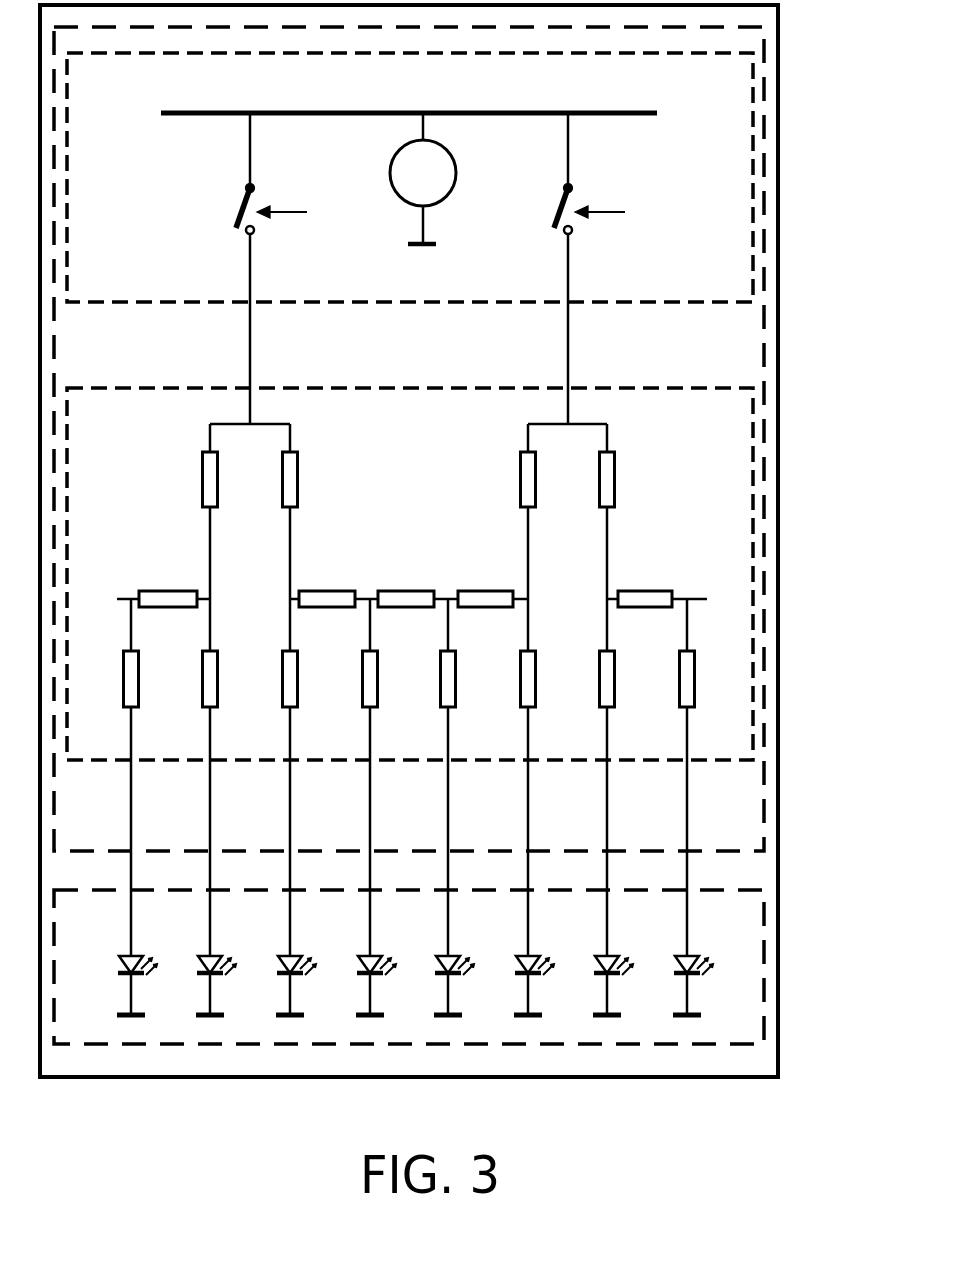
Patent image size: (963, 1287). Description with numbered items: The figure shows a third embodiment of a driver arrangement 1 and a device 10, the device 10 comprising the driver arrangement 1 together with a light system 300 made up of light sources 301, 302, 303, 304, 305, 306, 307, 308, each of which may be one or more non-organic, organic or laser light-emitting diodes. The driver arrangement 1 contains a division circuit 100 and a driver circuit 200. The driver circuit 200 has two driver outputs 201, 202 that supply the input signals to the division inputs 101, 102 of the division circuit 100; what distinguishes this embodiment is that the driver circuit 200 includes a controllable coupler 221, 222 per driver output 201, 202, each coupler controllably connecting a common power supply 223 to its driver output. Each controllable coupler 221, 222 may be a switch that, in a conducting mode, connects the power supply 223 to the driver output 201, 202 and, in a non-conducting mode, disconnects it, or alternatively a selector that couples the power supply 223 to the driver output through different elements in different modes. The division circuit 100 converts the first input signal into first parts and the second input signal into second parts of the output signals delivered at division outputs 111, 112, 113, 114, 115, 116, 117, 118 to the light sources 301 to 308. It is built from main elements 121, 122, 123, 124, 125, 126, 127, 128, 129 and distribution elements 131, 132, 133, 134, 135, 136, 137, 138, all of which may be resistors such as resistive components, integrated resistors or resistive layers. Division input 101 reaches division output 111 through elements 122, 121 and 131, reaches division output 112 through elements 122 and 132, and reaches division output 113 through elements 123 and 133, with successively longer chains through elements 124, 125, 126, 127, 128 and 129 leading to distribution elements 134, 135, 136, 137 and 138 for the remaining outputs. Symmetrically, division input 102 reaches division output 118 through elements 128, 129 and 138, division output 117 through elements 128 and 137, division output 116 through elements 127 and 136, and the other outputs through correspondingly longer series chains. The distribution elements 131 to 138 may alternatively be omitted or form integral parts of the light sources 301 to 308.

The driver arrangement 1 is at (764, 342).
The device 10 is at (779, 790).
The division circuit 100 is at (378, 388).
The division input 101 is at (248, 387).
The division input 102 is at (566, 387).
The division output 111 is at (135, 762).
The division output 112 is at (214, 762).
The division output 113 is at (294, 762).
The division output 114 is at (374, 762).
The division output 115 is at (452, 762).
The division output 116 is at (532, 762).
The division output 117 is at (611, 762).
The division output 118 is at (691, 762).
The main element 121 is at (168, 590).
The main element 122 is at (202, 468).
The main element 123 is at (298, 468).
The main element 124 is at (336, 590).
The main element 125 is at (406, 590).
The main element 126 is at (477, 590).
The main element 127 is at (520, 468).
The main element 128 is at (615, 468).
The main element 129 is at (660, 590).
The distribution element 131 is at (140, 691).
The distribution element 132 is at (219, 691).
The distribution element 133 is at (299, 691).
The distribution element 134 is at (379, 691).
The distribution element 135 is at (457, 691).
The distribution element 136 is at (537, 691).
The distribution element 137 is at (616, 691).
The distribution element 138 is at (696, 691).
The driver circuit 200 is at (452, 303).
The driver output 201 is at (253, 303).
The driver output 202 is at (573, 303).
The controllable coupler 221 is at (235, 210).
The controllable coupler 222 is at (553, 210).
The power supply 223 is at (398, 198).
The light system 300 is at (764, 967).
The light source 301 is at (139, 954).
The light source 302 is at (218, 954).
The light source 303 is at (298, 954).
The light source 304 is at (378, 954).
The light source 305 is at (456, 954).
The light source 306 is at (536, 954).
The light source 307 is at (615, 954).
The light source 308 is at (695, 954).